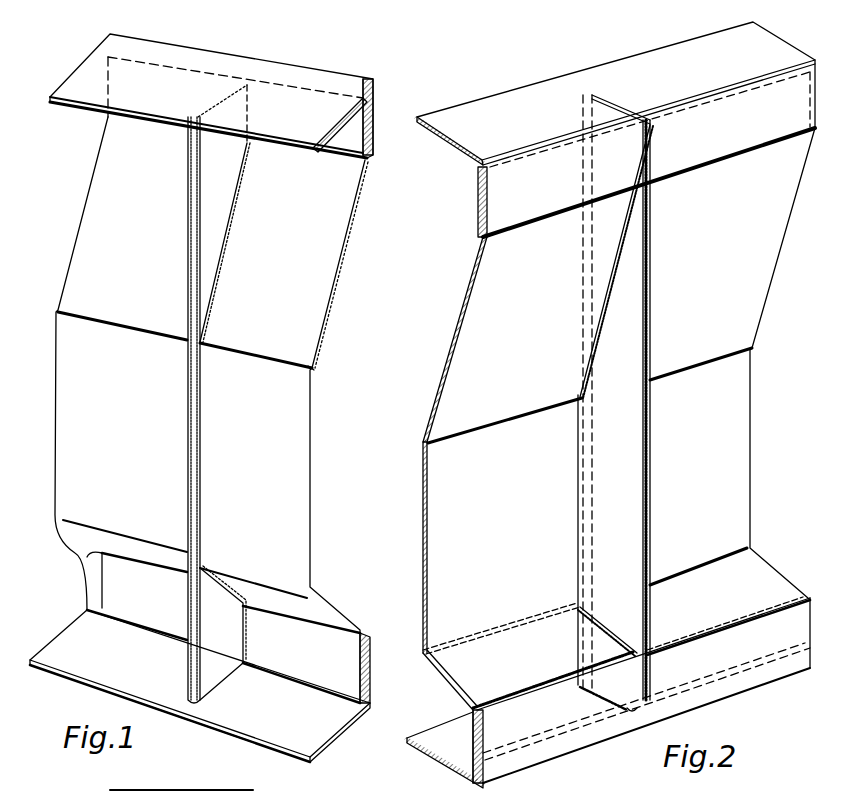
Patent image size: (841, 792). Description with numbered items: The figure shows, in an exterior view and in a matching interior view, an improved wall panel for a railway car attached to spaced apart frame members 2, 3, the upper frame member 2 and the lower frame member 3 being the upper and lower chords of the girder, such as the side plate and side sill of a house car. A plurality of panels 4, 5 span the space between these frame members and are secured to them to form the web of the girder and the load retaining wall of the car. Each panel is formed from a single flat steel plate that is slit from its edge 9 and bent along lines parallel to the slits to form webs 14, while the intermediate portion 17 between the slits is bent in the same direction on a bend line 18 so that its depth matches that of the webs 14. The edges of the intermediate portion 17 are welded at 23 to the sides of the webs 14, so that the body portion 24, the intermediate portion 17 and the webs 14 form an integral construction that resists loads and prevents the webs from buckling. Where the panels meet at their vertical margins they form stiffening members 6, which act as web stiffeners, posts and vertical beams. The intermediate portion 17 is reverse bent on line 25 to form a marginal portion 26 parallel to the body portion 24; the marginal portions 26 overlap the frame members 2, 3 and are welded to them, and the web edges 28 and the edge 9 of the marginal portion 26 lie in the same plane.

In FIG. 1, the upper frame member 2 is at (373, 117).
In FIG. 2, the upper frame member 2 is at (453, 150).
In FIG. 1, the lower frame member 3 is at (337, 727).
In FIG. 2, the lower frame member 3 is at (433, 757).
In FIG. 1, the panel 4 is at (121, 378).
In FIG. 2, the panel 4 is at (732, 363).
In FIG. 1, the panel 5 is at (285, 431).
In FIG. 2, the panel 5 is at (475, 547).
In FIG. 2, the stiffening member 6 is at (600, 517).
In FIG. 1, the edge of the plate 9 is at (130, 790).
In FIG. 2, the web 14 is at (614, 403).
In FIG. 2, the intermediate portion 17 is at (452, 338).
In FIG. 1, the bend line 18 is at (312, 368).
In FIG. 1, the weld 23 is at (223, 233).
In FIG. 2, the body portion 24 is at (423, 563).
In FIG. 1, the reverse bend line 25 is at (368, 162).
In FIG. 2, the marginal portion 26 is at (477, 198).
In FIG. 1, the web edge 28 is at (202, 790).